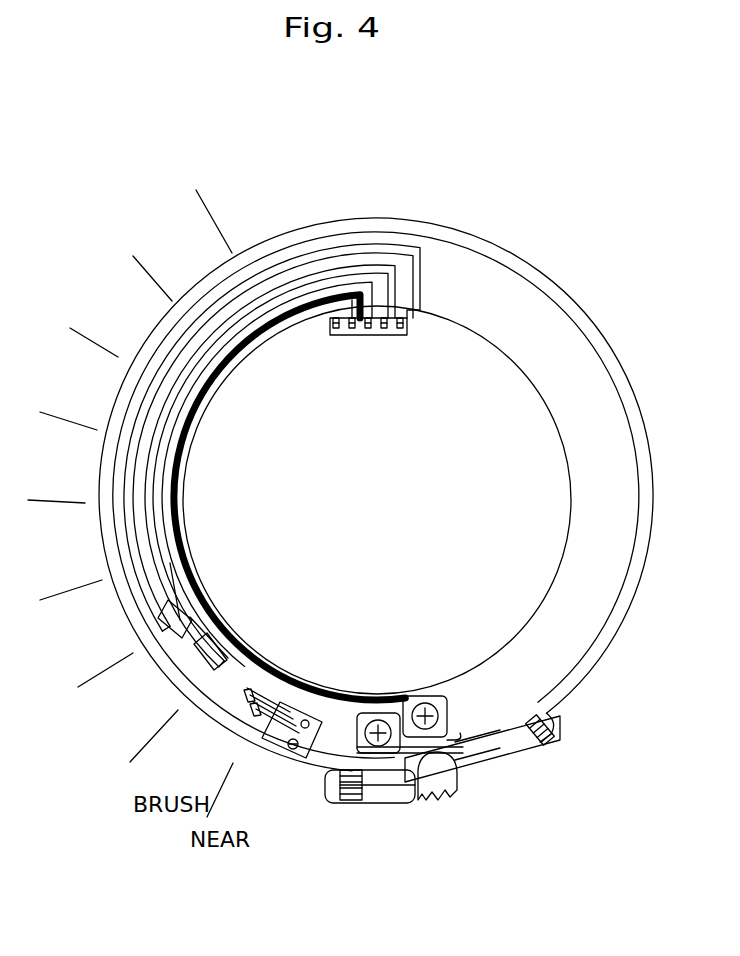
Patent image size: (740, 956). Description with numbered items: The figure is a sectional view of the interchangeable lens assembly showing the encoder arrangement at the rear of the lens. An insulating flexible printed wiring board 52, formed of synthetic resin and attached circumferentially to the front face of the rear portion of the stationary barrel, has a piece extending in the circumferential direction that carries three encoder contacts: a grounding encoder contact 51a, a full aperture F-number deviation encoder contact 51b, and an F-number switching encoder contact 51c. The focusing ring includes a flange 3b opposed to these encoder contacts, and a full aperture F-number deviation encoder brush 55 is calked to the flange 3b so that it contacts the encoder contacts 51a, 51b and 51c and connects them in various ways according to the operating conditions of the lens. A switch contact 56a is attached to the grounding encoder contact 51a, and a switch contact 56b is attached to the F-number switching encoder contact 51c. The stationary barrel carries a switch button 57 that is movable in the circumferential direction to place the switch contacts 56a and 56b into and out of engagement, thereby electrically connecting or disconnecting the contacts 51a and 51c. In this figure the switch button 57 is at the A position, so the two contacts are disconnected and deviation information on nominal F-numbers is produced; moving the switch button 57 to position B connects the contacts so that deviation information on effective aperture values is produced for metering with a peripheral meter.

The flange 3b is at (592, 582).
The grounding encoder contact 51a is at (137, 582).
The full aperture F-number deviation encoder contact 51b is at (170, 412).
The F-number switching encoder contact 51c is at (182, 510).
The flexible printed wiring board 52 is at (233, 678).
The full aperture F-number deviation encoder brush 55 is at (257, 720).
The switch contact 56a is at (400, 793).
The switch contact 56b is at (457, 745).
The switch button 57 is at (421, 805).
The A position A is at (445, 823).
The position B is at (473, 817).